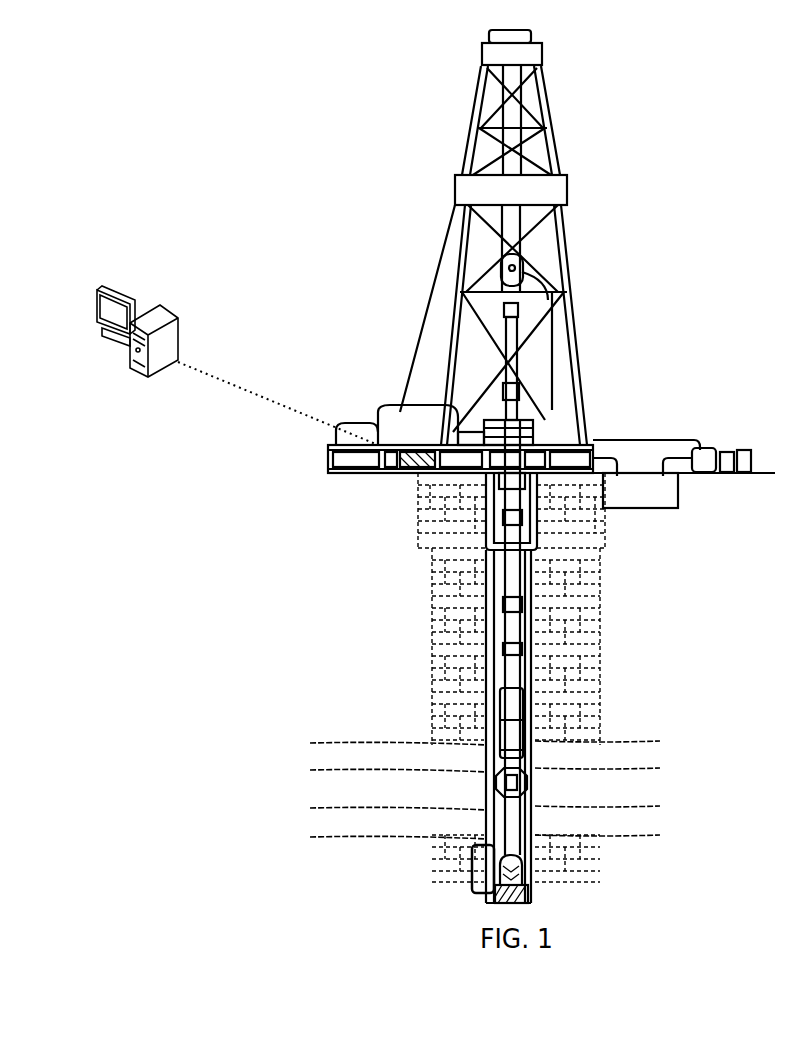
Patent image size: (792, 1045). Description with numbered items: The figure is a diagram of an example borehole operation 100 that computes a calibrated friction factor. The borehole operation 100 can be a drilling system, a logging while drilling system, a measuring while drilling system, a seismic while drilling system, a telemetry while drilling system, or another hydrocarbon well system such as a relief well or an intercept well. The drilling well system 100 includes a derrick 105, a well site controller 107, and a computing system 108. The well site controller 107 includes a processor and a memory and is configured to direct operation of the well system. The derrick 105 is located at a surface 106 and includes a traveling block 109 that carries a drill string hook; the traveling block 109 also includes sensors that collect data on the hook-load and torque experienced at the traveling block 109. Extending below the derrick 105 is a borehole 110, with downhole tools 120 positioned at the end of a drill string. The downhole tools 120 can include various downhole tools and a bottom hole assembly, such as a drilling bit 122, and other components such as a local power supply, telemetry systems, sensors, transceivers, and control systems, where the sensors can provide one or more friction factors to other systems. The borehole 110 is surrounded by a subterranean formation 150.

The borehole operation 100 is at (238, 93).
The derrick 105 is at (562, 237).
The surface 106 is at (328, 471).
The well site controller 107 is at (398, 459).
The computing system 108 is at (97, 295).
The traveling block 109 is at (520, 273).
The borehole 110 is at (540, 602).
The downhole tools 120 is at (470, 870).
The drilling bit 122 is at (494, 903).
The subterranean formation 150 is at (594, 850).